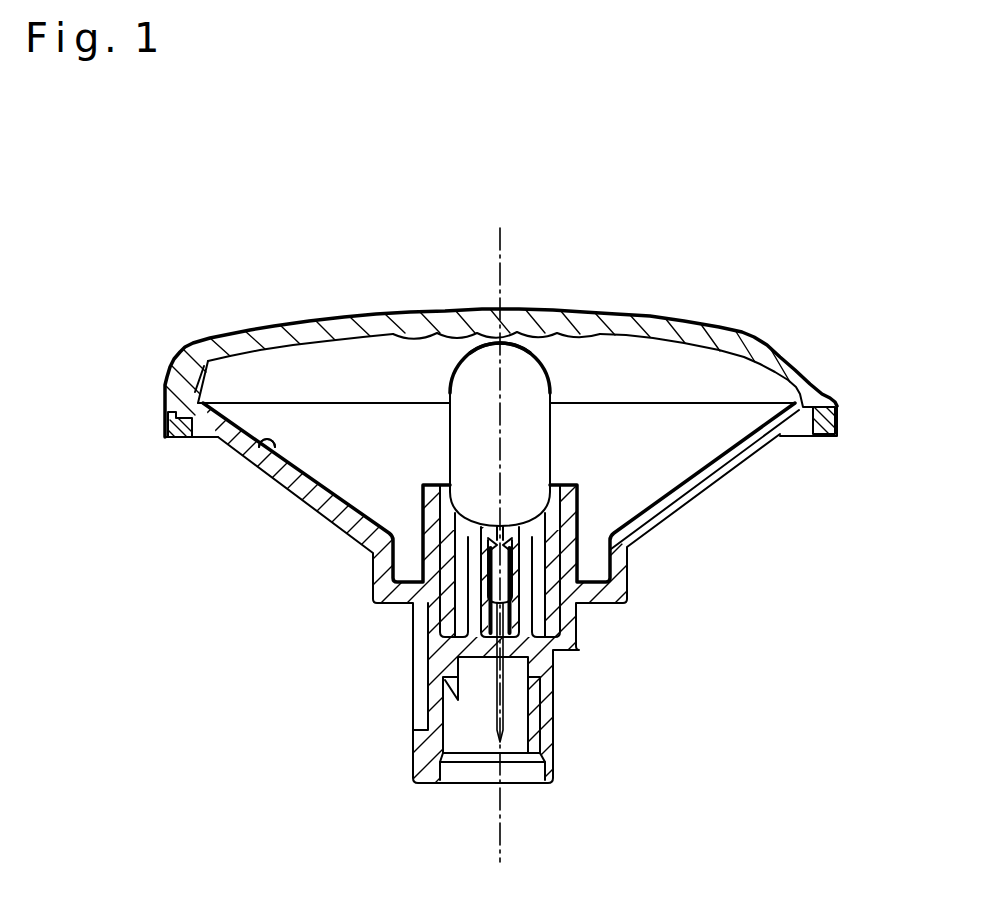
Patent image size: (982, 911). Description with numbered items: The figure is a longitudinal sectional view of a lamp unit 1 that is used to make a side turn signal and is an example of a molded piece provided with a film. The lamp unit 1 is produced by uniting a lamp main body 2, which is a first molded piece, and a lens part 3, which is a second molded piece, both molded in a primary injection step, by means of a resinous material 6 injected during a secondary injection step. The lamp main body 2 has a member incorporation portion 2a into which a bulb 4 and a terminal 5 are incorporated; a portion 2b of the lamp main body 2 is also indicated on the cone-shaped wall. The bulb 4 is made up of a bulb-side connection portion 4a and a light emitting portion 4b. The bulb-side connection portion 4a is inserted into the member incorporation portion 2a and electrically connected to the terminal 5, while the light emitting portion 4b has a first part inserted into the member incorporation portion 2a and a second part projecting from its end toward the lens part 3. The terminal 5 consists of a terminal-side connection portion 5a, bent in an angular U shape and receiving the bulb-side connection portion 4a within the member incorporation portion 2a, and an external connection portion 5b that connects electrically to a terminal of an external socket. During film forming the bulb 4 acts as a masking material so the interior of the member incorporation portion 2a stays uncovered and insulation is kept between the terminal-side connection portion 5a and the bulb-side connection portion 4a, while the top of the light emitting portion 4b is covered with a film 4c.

The lamp unit 1 is at (801, 338).
The lamp main body 2 is at (703, 482).
The member incorporation portion 2a is at (443, 543).
The reflecting portion 2b is at (272, 460).
The lens part 3 is at (540, 318).
The bulb 4 is at (437, 384).
The bulb-side connection portion 4a is at (467, 592).
The light emitting portion 4b is at (533, 430).
The film 4c is at (465, 348).
The terminal 5 is at (510, 695).
The terminal-side connection portion 5a is at (505, 632).
The external connection portion 5b is at (493, 708).
The resinous material 6 is at (183, 440).